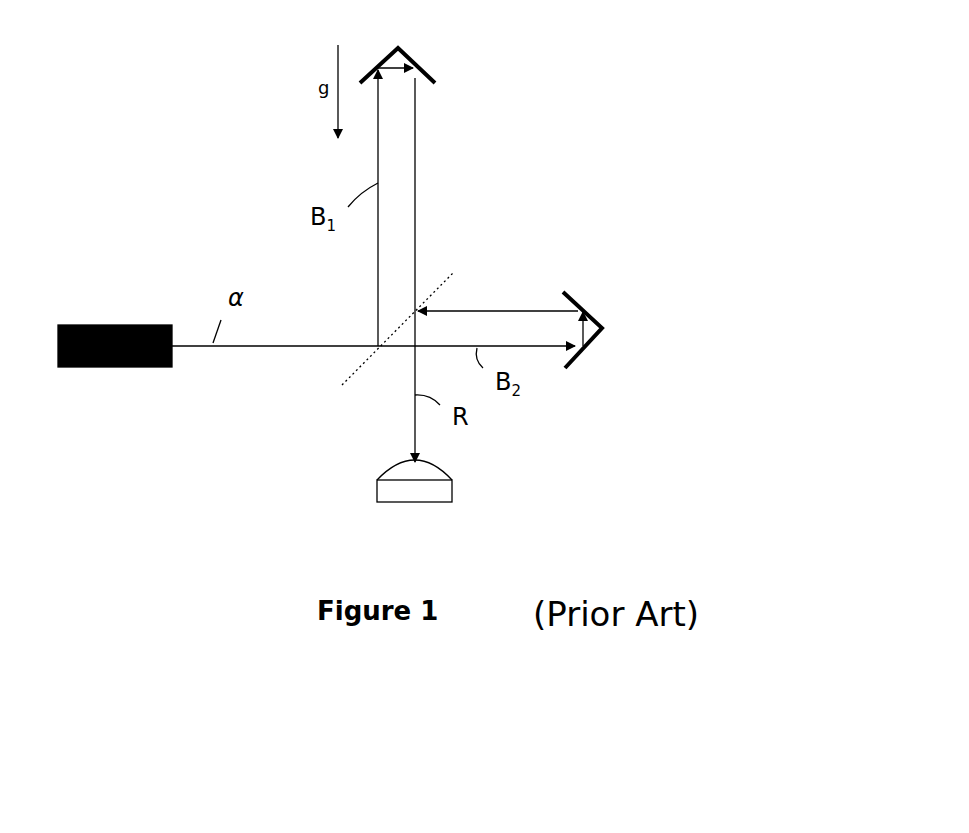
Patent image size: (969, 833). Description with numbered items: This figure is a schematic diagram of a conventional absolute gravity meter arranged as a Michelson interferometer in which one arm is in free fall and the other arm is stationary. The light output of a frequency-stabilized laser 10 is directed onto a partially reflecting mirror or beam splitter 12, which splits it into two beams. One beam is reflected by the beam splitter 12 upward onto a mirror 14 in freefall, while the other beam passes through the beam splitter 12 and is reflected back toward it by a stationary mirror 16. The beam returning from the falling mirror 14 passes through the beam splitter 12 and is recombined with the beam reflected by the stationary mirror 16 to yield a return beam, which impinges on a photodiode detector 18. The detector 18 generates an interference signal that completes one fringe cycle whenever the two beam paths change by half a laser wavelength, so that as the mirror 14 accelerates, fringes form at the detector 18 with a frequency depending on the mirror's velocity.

The frequency-stabilized laser 10 is at (130, 367).
The beam splitter 12 is at (435, 285).
The mirror in freefall 14 is at (400, 48).
The stationary mirror 16 is at (582, 293).
The photodiode detector 18 is at (452, 490).